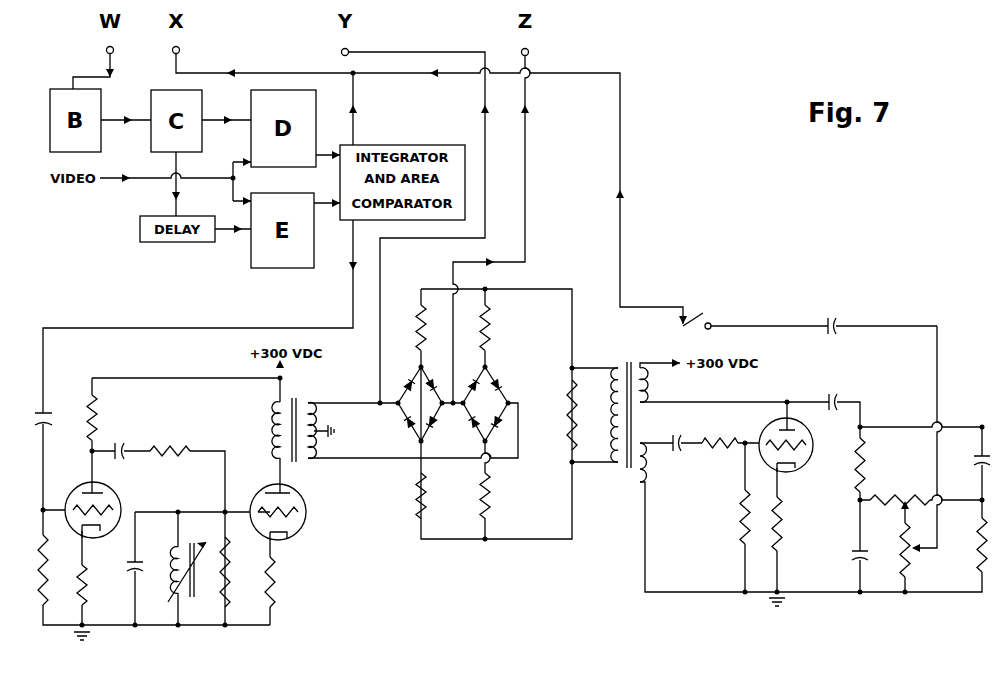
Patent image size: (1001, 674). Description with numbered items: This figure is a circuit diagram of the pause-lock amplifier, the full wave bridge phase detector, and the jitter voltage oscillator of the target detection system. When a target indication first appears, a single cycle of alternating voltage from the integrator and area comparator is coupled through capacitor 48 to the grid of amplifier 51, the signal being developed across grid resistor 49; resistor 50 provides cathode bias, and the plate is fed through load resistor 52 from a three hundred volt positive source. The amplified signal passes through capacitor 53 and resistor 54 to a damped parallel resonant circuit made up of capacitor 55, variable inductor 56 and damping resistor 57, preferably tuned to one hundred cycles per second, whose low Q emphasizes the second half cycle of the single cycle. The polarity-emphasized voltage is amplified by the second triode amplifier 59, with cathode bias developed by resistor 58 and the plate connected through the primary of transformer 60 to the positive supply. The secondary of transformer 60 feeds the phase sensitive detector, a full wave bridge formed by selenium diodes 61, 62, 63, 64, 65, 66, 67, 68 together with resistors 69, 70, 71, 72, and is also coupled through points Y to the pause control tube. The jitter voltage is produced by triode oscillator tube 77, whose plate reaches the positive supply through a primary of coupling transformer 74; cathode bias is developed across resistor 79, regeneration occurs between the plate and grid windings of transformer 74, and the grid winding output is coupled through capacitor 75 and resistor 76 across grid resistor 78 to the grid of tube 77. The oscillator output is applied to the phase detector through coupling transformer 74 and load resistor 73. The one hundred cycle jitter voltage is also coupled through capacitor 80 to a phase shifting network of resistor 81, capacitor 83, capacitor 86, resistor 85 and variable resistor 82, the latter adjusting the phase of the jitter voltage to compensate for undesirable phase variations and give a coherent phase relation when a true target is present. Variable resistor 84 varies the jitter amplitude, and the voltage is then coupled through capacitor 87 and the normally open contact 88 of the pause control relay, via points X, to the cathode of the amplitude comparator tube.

The capacitor 48 is at (35, 418).
The grid resistor 49 is at (40, 565).
The resistor 50 is at (80, 583).
The amplifier 51 is at (76, 491).
The load resistor 52 is at (98, 410).
The capacitor 53 is at (121, 443).
The resistor 54 is at (170, 447).
The capacitor 55 is at (127, 566).
The variable inductor 56 is at (174, 561).
The damping resistor 57 is at (222, 578).
The resistor 58 is at (267, 580).
The second triode amplifier 59 is at (270, 488).
The transformer 60 is at (295, 400).
The selenium diode 61 is at (404, 386).
The selenium diode 62 is at (428, 386).
The selenium diode 63 is at (430, 427).
The selenium diode 64 is at (408, 427).
The selenium diode 65 is at (470, 386).
The selenium diode 66 is at (498, 386).
The selenium diode 67 is at (496, 427).
The selenium diode 68 is at (474, 427).
The resistor 69 is at (418, 322).
The resistor 70 is at (488, 322).
The resistor 71 is at (488, 498).
The resistor 72 is at (424, 498).
The load resistor 73 is at (567, 410).
The coupling transformer 74 is at (623, 462).
The capacitor 75 is at (677, 436).
The resistor 76 is at (718, 438).
The triode oscillator tube 77 is at (768, 430).
The grid resistor 78 is at (742, 513).
The resistor 79 is at (781, 518).
The capacitor 80 is at (834, 394).
The resistor 81 is at (866, 459).
The variable resistor 82 is at (901, 495).
The capacitor 83 is at (851, 556).
The variable resistor 84 is at (909, 565).
The resistor 85 is at (977, 540).
The capacitor 86 is at (974, 461).
The capacitor 87 is at (832, 318).
The normally open contact 88 is at (697, 319).